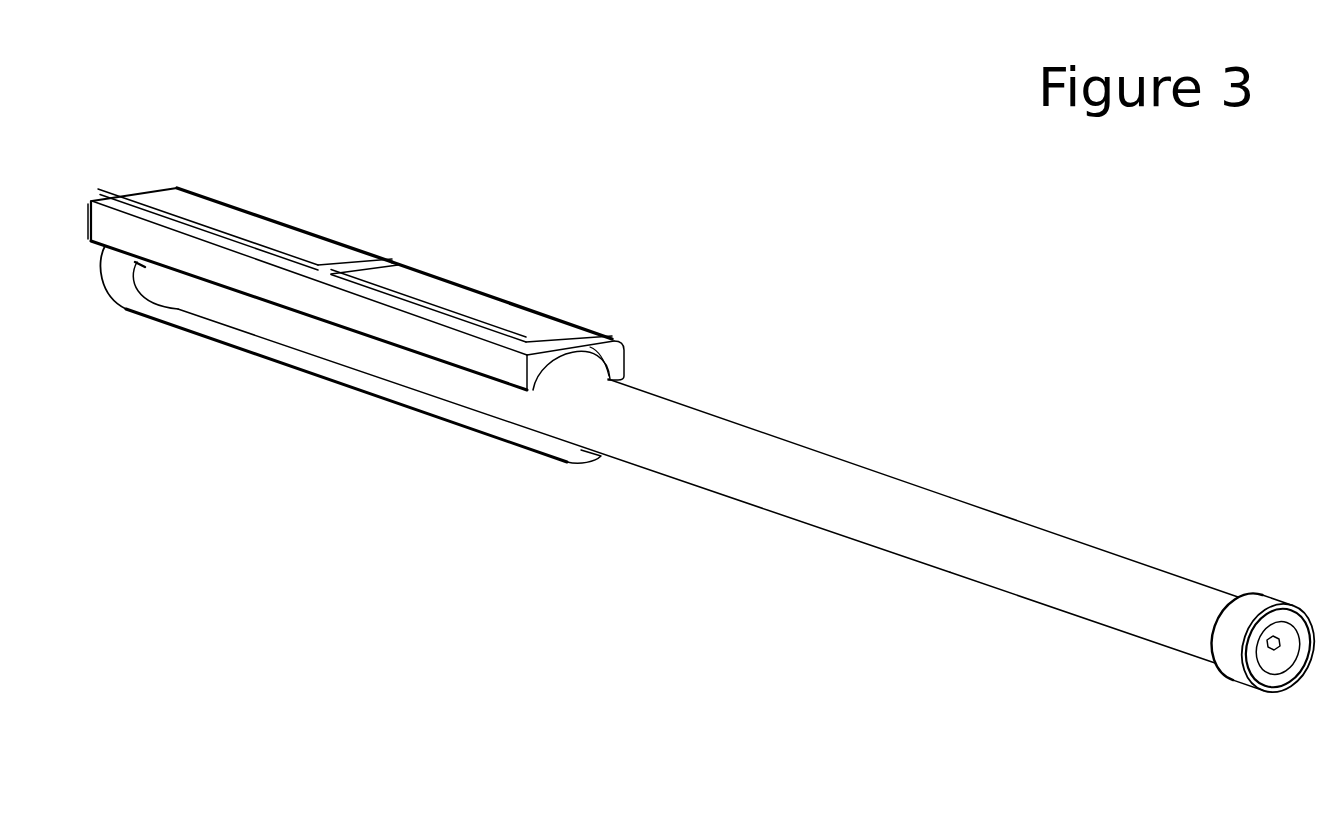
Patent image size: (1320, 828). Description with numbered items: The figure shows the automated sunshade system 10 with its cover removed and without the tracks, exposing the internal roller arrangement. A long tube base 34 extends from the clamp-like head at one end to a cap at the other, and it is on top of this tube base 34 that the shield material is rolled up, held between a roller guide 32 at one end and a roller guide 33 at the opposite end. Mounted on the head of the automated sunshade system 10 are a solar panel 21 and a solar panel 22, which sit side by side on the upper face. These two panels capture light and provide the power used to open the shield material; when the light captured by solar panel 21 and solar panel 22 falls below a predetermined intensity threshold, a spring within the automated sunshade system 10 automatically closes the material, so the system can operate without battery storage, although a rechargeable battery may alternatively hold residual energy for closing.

The automated sunshade system 10 is at (803, 446).
The solar panel 21 is at (273, 237).
The solar panel 22 is at (453, 298).
The roller guide 32 is at (1245, 598).
The roller guide 33 is at (122, 290).
The tube base 34 is at (957, 522).